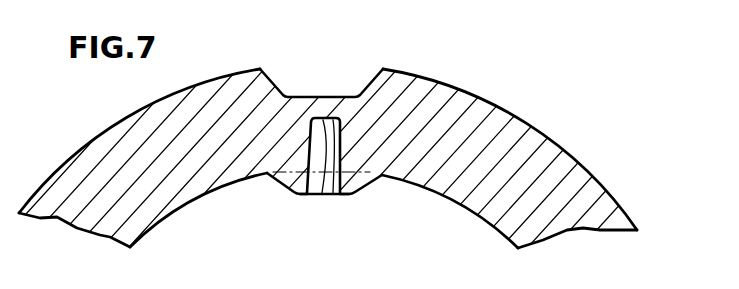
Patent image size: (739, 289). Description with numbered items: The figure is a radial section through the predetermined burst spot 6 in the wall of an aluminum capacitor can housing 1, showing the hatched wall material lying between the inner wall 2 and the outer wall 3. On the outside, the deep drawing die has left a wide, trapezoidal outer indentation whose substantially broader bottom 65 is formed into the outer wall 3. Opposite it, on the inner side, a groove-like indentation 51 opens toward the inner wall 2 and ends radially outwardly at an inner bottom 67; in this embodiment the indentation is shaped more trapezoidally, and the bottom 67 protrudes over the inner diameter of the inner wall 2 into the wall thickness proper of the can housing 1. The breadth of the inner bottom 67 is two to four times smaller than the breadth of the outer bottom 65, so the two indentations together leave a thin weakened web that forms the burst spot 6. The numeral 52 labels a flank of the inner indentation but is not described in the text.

The can housing 1 is at (555, 163).
The inner wall 2 is at (488, 224).
The outer wall 3 is at (485, 97).
The predetermined burst spot 6 is at (328, 107).
The groove-like indentation 51 is at (332, 193).
The recess 52 is at (362, 181).
The outer bottom 65 is at (305, 97).
The inner bottom 67 is at (318, 194).